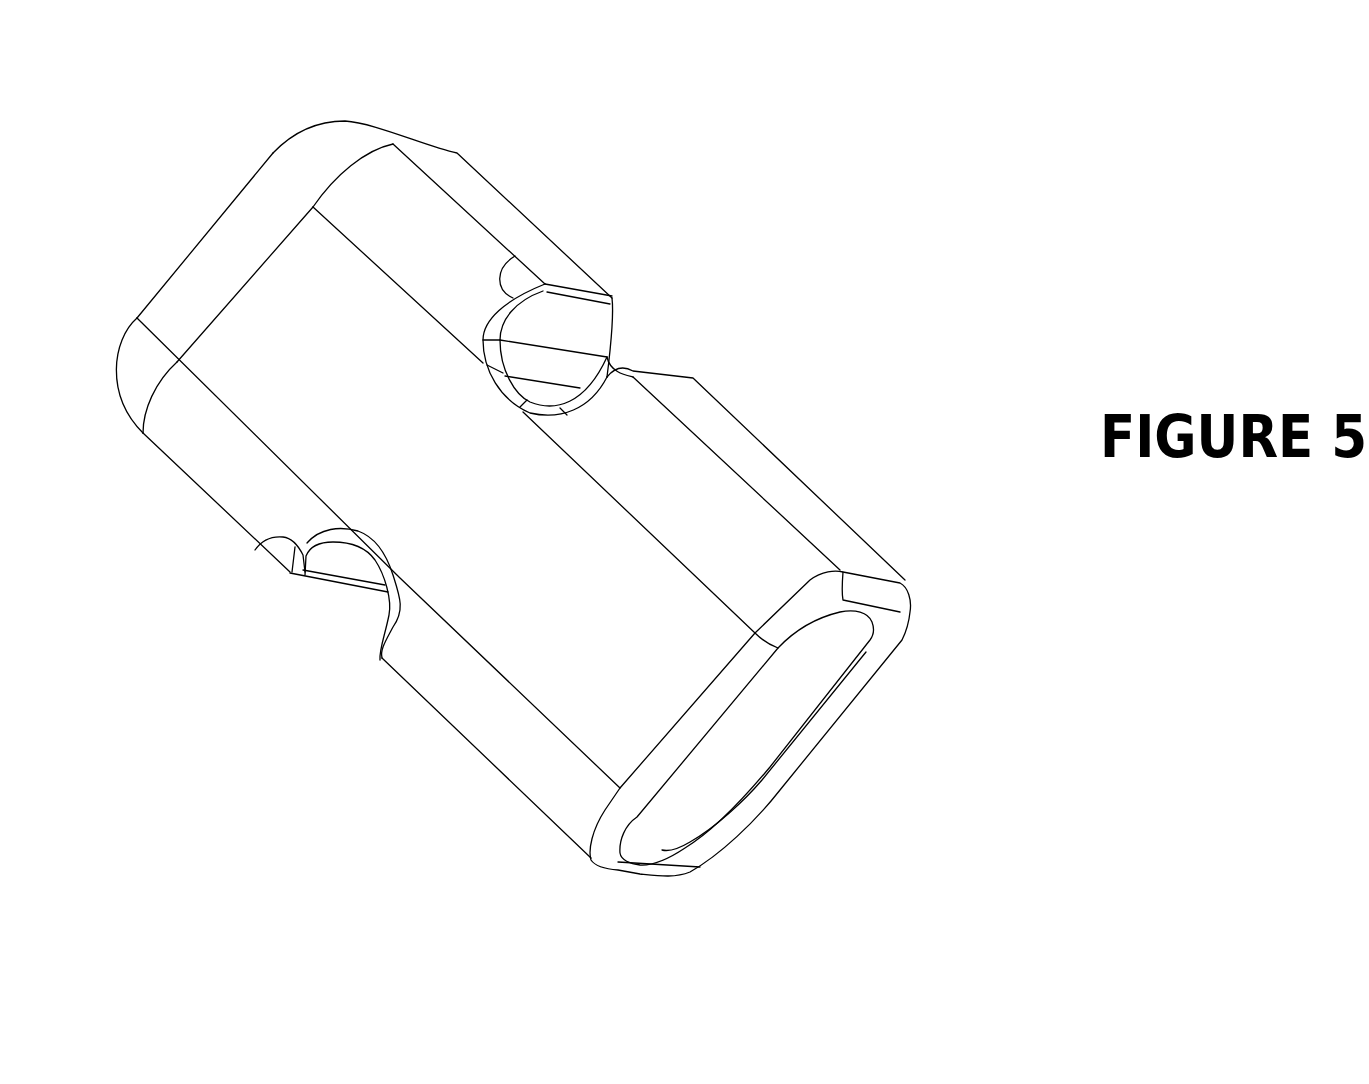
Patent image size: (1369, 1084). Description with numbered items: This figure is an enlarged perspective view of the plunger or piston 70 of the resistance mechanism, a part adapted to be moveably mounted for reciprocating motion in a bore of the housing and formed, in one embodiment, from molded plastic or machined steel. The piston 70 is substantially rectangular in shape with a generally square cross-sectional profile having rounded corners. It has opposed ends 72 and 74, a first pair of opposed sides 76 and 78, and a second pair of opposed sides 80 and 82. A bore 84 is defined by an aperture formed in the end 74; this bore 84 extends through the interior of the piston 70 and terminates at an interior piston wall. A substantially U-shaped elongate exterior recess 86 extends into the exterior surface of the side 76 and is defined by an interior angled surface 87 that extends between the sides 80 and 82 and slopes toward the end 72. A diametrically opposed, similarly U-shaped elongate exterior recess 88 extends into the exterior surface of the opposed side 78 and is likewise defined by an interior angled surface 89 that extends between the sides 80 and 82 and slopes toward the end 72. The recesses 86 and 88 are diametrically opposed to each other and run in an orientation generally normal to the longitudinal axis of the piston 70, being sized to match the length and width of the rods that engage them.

The piston 70 is at (985, 177).
The end 72 is at (227, 207).
The end 74 is at (893, 622).
The side 76 is at (807, 513).
The side 78 is at (203, 493).
The side 80 is at (533, 653).
The side 82 is at (750, 823).
The bore 84 is at (760, 753).
The exterior recess 86 is at (580, 370).
The interior angled surface 87 is at (513, 253).
The exterior recess 88 is at (387, 590).
The interior angled surface 89 is at (267, 547).